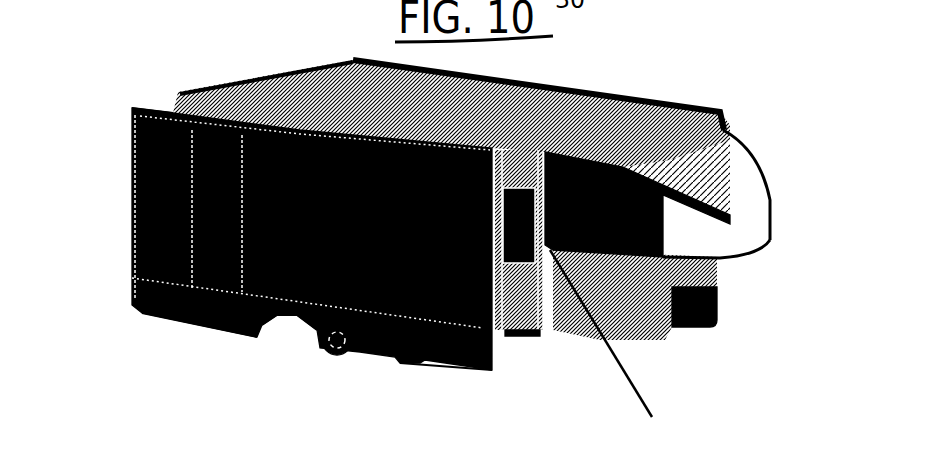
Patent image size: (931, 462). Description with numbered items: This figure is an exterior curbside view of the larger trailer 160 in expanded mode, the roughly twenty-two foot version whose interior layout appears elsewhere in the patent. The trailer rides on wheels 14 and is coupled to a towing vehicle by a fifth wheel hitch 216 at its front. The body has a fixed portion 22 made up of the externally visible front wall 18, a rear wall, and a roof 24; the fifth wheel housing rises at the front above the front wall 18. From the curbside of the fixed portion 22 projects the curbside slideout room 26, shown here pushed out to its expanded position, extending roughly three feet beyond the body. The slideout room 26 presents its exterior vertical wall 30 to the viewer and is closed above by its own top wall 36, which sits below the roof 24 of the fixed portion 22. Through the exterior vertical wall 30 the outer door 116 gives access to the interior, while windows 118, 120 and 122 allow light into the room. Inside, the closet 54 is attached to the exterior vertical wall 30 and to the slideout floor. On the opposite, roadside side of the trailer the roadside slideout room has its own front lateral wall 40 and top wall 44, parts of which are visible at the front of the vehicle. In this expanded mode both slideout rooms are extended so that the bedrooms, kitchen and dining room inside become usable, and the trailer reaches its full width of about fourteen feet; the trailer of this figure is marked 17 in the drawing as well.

The wheels 14 is at (335, 352).
The trailer body 17 is at (128, 288).
The front wall 18 is at (613, 290).
The fixed portion 22 is at (244, 50).
The roof 24 is at (310, 75).
The curbside slideout room 26 is at (433, 374).
The exterior vertical wall 30 is at (260, 335).
The top wall 36 is at (172, 112).
The front lateral wall 40 is at (697, 323).
The top wall 44 is at (636, 98).
The closet 54 is at (527, 333).
The outer door 116 is at (185, 330).
The window 118 is at (625, 347).
The window 120 is at (517, 330).
The window 122 is at (130, 205).
The larger trailer 160 is at (782, 146).
The fifth wheel hitch 216 is at (710, 260).